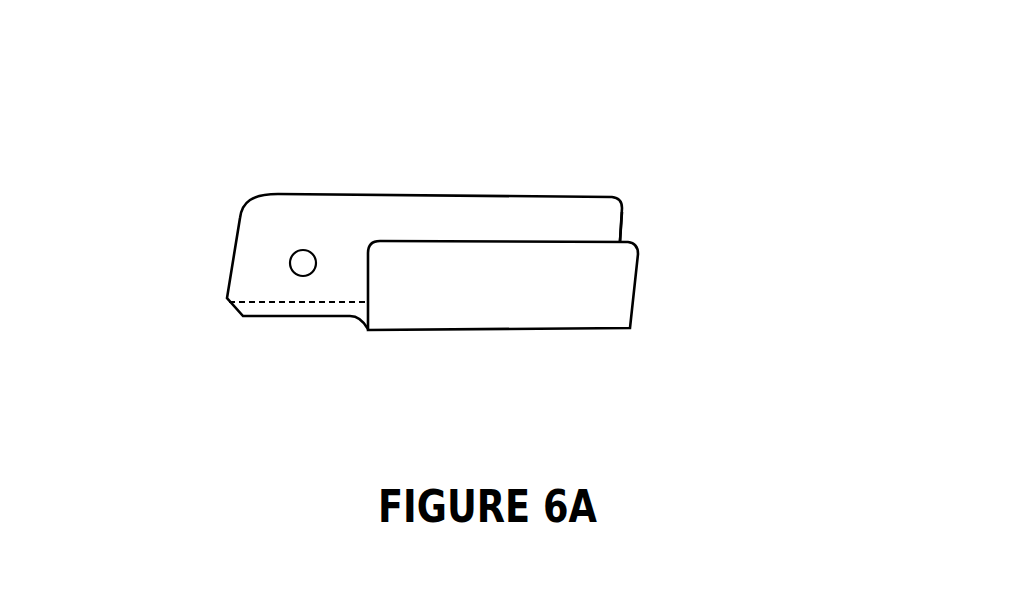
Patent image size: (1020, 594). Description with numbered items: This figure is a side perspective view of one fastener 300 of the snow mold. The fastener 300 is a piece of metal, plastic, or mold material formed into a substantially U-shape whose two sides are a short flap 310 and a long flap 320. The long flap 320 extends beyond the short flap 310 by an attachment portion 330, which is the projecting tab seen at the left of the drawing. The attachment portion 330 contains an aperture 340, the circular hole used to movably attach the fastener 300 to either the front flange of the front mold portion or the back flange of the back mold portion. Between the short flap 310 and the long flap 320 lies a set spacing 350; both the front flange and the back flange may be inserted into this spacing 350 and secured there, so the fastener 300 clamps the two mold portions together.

The fastener 300 is at (473, 204).
The short flap 310 is at (638, 277).
The long flap 320 is at (538, 191).
The attachment portion 330 is at (229, 317).
The aperture 340 is at (290, 260).
The spacing 350 is at (622, 228).